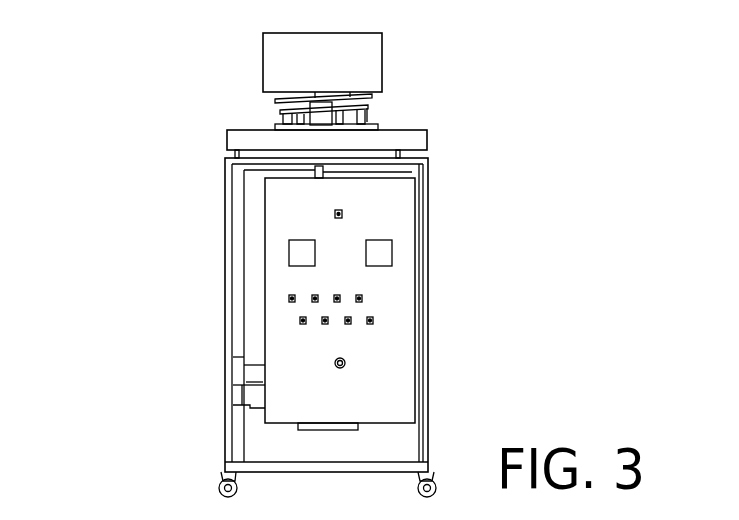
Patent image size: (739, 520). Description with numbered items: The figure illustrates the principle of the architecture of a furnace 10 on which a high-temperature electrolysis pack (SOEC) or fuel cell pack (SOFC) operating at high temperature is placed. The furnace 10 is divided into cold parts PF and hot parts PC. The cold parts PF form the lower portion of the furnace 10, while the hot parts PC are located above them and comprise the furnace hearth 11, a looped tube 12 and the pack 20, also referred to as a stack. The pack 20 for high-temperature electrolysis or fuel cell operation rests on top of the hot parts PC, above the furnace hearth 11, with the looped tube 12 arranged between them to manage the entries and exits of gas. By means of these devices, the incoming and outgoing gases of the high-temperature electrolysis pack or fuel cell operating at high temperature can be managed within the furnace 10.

The furnace 10 is at (125, 127).
The furnace hearth 11 is at (232, 140).
The looped tube 12 is at (278, 101).
The pack 20 is at (273, 57).
The hot parts PC is at (445, 32).
The cold parts PF is at (445, 170).